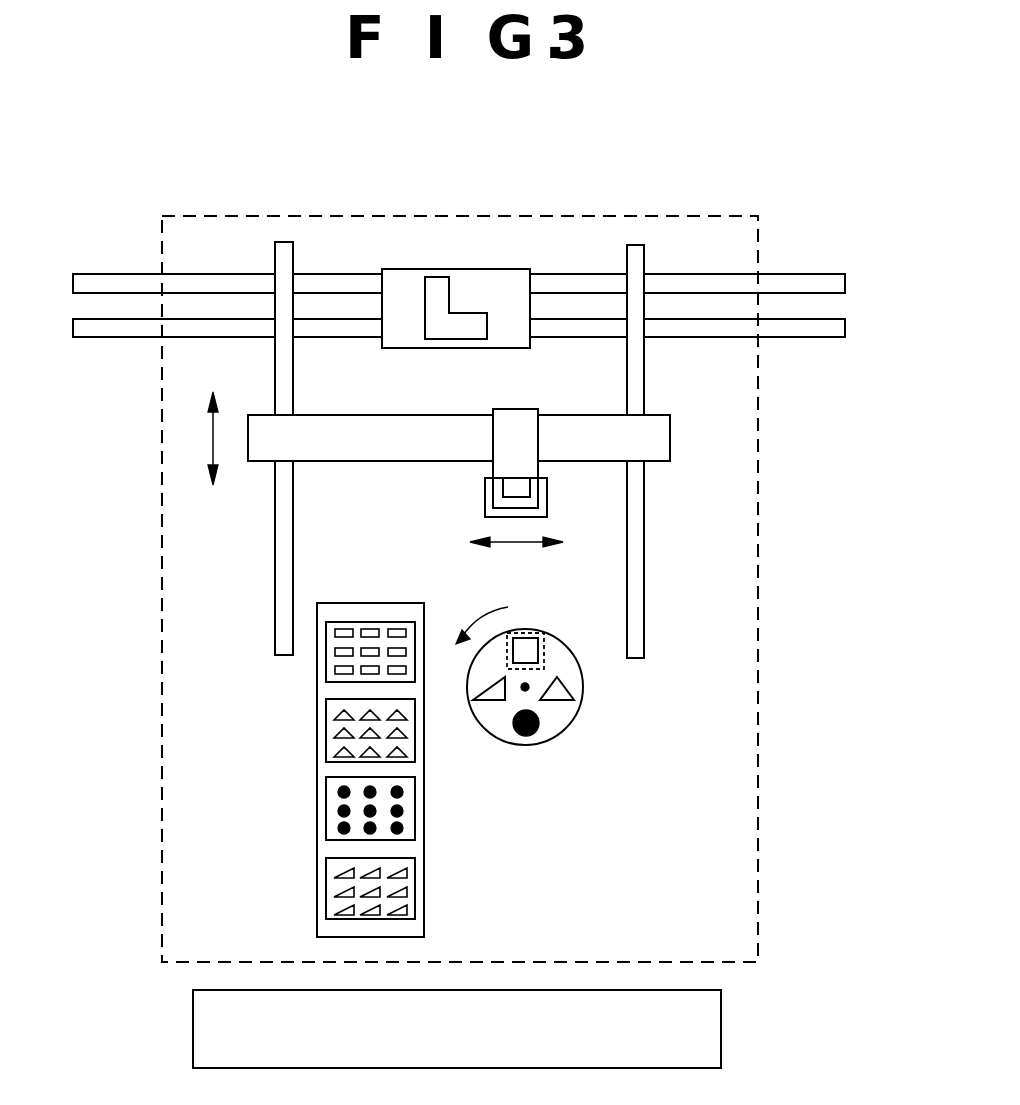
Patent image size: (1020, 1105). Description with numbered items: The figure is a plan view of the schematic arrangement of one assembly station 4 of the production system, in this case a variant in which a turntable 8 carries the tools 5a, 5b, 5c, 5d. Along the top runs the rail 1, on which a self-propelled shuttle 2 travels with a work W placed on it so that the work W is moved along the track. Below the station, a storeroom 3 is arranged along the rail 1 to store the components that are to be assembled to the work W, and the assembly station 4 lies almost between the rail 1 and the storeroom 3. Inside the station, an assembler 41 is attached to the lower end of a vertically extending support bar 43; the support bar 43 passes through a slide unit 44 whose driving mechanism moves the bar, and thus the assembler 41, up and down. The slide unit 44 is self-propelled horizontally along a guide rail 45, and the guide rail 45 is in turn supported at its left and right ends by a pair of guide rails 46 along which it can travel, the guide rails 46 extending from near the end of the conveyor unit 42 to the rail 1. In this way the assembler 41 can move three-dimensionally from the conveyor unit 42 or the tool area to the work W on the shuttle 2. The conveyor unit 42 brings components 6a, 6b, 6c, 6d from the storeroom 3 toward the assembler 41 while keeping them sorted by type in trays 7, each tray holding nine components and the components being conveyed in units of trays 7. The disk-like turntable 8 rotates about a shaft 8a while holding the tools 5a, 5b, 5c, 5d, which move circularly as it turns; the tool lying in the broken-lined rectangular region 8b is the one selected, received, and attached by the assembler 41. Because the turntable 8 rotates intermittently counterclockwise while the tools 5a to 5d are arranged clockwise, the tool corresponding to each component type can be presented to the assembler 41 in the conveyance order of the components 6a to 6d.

The rail 1 is at (843, 289).
The shuttle 2 is at (493, 268).
The work W is at (435, 290).
The storeroom 3 is at (721, 1030).
The assembly station 4 is at (687, 216).
The tool 5a is at (528, 653).
The tool 5b is at (561, 688).
The tool 5c is at (526, 738).
The tool 5d is at (492, 695).
The component 6a is at (345, 633).
The component 6b is at (330, 750).
The component 6c is at (335, 792).
The component 6d is at (340, 908).
The tray 7 is at (326, 735).
The turntable 8 is at (594, 731).
The shaft 8a is at (530, 692).
The region 8b is at (527, 635).
The assembler 41 is at (482, 502).
The conveyor unit 42 is at (313, 924).
The support bar 43 is at (520, 488).
The slide unit 44 is at (515, 409).
The guide rail 45 is at (657, 438).
The guide rail 46 is at (281, 368).